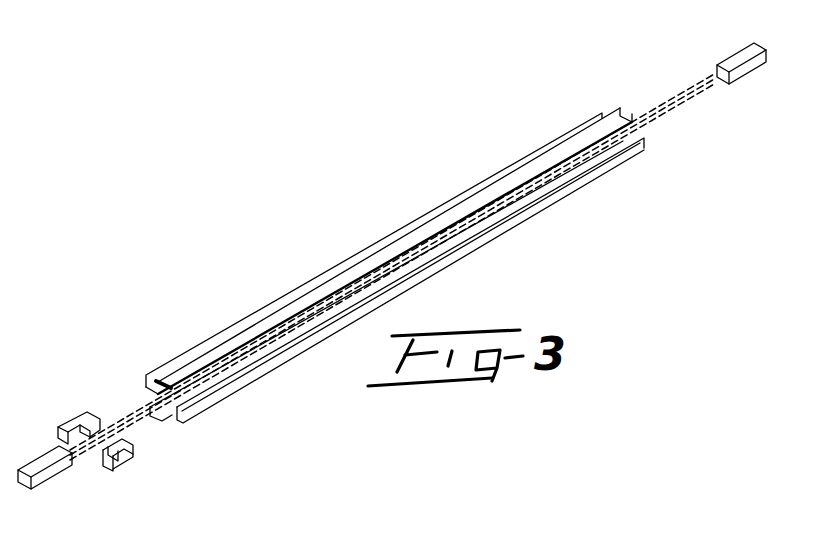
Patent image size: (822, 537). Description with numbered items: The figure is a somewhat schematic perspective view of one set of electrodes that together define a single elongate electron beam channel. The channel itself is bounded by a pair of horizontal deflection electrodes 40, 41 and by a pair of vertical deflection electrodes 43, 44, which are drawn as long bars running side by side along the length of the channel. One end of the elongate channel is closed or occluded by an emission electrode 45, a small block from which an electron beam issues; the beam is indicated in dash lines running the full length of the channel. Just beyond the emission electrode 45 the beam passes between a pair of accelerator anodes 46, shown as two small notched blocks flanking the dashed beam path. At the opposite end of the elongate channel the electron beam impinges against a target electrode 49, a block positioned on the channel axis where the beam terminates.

The horizontal deflection electrode 40 is at (143, 390).
The horizontal deflection electrode 41 is at (194, 406).
The vertical deflection electrode 43 is at (200, 358).
The vertical deflection electrode 44 is at (153, 418).
The emission electrode 45 is at (42, 482).
The accelerator anode 46 is at (60, 424).
The target electrode 49 is at (740, 52).